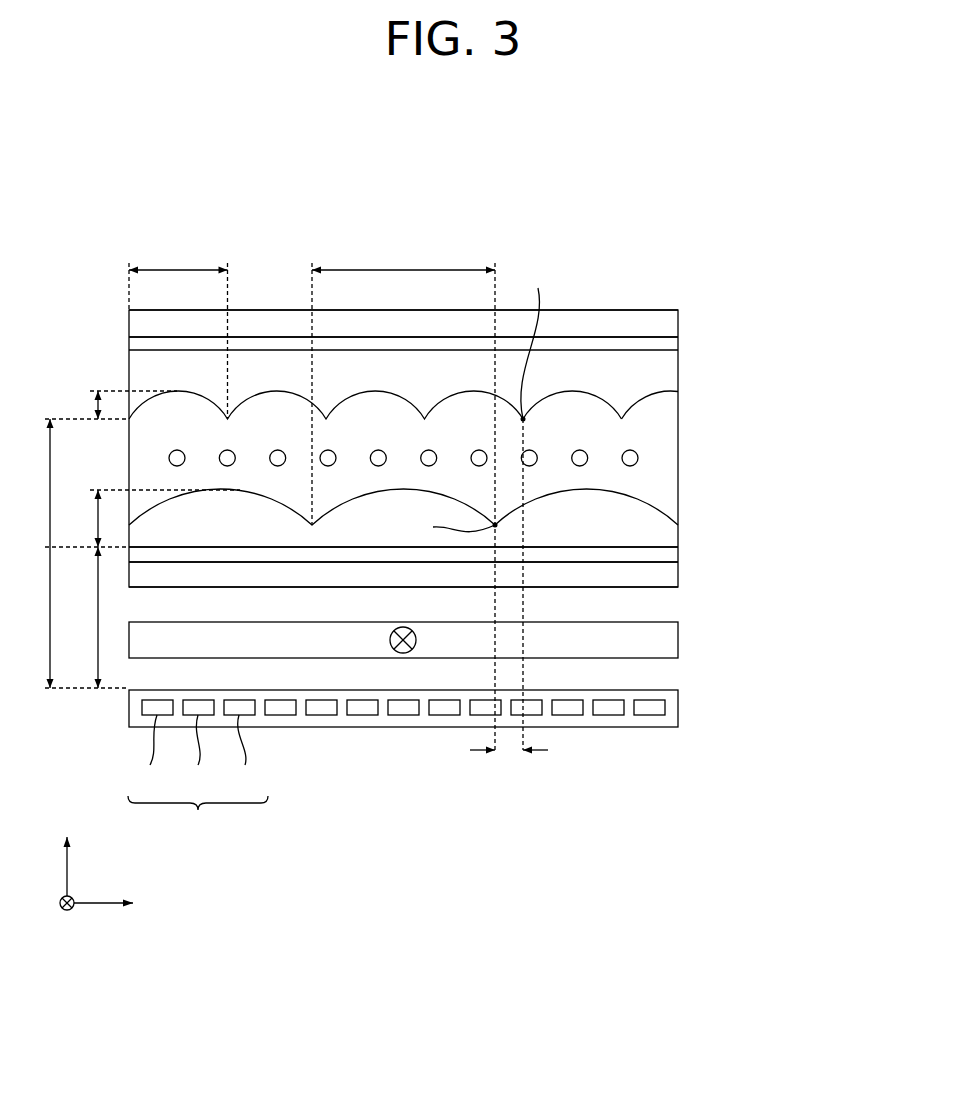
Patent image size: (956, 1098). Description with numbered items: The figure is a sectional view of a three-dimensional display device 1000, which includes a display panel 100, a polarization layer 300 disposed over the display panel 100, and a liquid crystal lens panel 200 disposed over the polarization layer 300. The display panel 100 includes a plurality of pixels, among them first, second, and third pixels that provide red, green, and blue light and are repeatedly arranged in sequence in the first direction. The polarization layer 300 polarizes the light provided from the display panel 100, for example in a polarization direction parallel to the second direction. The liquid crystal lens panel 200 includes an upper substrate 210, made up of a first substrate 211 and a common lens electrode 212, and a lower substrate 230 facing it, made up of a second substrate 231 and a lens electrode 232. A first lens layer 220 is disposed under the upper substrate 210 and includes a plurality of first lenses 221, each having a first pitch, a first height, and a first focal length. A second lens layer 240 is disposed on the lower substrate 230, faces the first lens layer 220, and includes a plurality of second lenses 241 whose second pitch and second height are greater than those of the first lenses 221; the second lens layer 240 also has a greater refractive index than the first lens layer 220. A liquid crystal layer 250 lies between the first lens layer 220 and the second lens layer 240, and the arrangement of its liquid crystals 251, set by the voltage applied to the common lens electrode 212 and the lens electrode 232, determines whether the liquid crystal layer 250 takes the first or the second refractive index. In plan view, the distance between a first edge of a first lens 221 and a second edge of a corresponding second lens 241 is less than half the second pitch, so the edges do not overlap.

The 3D display device 1000 is at (705, 240).
The display panel 100 is at (688, 706).
The liquid crystal lens panel 200 is at (837, 313).
The upper substrate 210 is at (773, 295).
The first substrate 211 is at (668, 323).
The common lens electrode 212 is at (668, 341).
The first lens layer 220 is at (668, 389).
The first lens 221 is at (668, 381).
The liquid crystal layer 250 is at (668, 418).
The liquid crystal 251 is at (638, 452).
The second lens layer 240 is at (655, 517).
The second lens 241 is at (634, 494).
The lower substrate 230 is at (773, 545).
The lens electrode 232 is at (668, 553).
The second substrate 231 is at (668, 573).
The polarization layer 300 is at (668, 635).